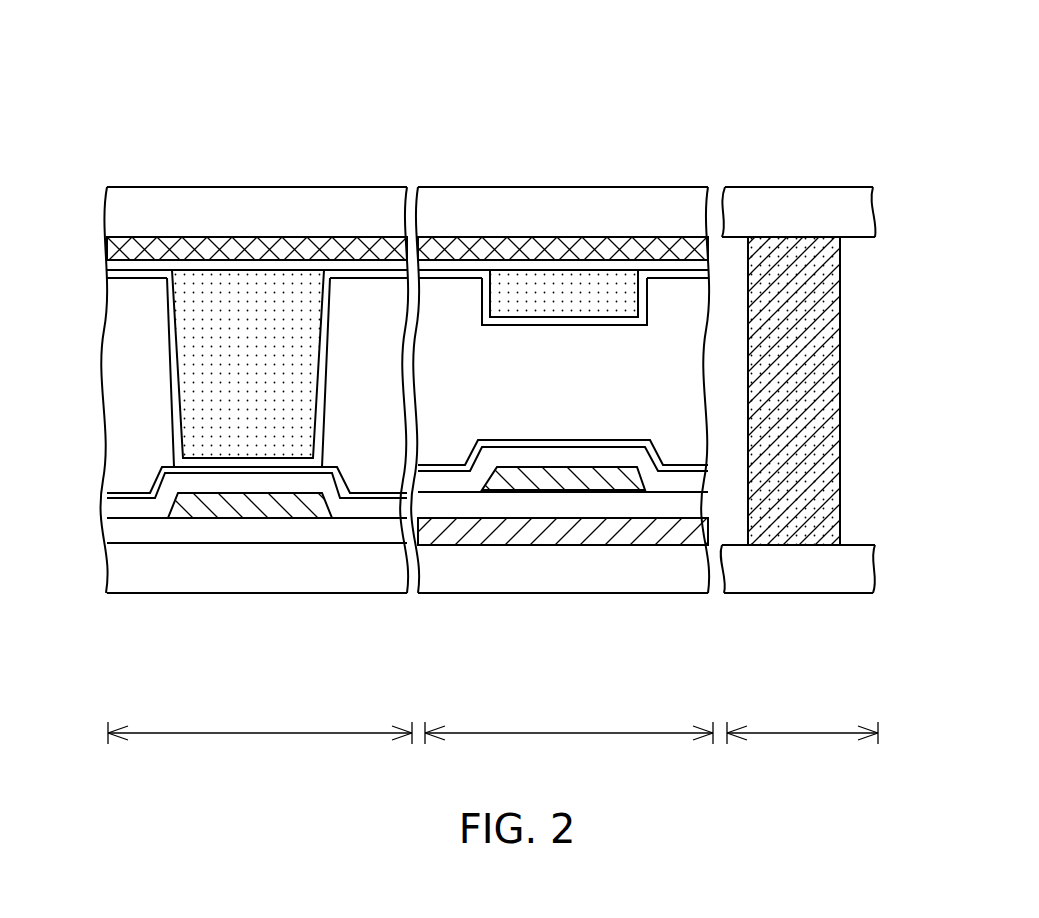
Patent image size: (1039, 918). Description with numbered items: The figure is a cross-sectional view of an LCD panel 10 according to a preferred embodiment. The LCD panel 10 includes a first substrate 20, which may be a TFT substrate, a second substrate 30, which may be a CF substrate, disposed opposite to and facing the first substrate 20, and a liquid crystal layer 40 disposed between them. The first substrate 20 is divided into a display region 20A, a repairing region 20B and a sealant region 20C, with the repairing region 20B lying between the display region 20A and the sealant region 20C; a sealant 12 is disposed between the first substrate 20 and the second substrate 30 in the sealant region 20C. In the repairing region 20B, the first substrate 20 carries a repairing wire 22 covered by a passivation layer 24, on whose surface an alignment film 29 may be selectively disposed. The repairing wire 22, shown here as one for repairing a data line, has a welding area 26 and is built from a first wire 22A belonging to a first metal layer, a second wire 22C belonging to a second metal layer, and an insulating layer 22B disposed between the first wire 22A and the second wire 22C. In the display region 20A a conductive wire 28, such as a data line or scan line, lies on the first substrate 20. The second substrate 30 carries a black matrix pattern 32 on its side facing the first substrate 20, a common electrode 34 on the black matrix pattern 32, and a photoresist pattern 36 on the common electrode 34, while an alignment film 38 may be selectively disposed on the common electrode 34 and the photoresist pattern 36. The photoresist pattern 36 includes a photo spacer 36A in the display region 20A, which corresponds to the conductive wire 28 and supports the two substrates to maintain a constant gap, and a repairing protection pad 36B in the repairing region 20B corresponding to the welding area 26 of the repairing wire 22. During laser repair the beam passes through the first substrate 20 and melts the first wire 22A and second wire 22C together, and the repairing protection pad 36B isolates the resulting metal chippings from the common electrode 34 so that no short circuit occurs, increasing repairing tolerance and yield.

The LCD panel 10 is at (922, 126).
The sealant 12 is at (777, 394).
The first substrate 20 is at (228, 581).
The display region 20A is at (260, 725).
The repairing region 20B is at (569, 725).
The sealant region 20C is at (802, 725).
The repairing wire 22 is at (407, 582).
The first wire 22A is at (438, 533).
The insulating layer 22B is at (290, 533).
The second wire 22C is at (525, 485).
The passivation layer 24 is at (357, 508).
The welding area 26 is at (652, 433).
The conductive wire 28 is at (175, 517).
The alignment film 29 is at (344, 489).
The second substrate 30 is at (245, 222).
The black matrix pattern 32 is at (148, 238).
The common electrode 34 is at (107, 263).
The photoresist pattern 36 is at (405, 271).
The photo spacer 36A is at (292, 295).
The repairing protection pad 36B is at (543, 229).
The alignment film 38 is at (350, 280).
The liquid crystal layer 40 is at (123, 387).